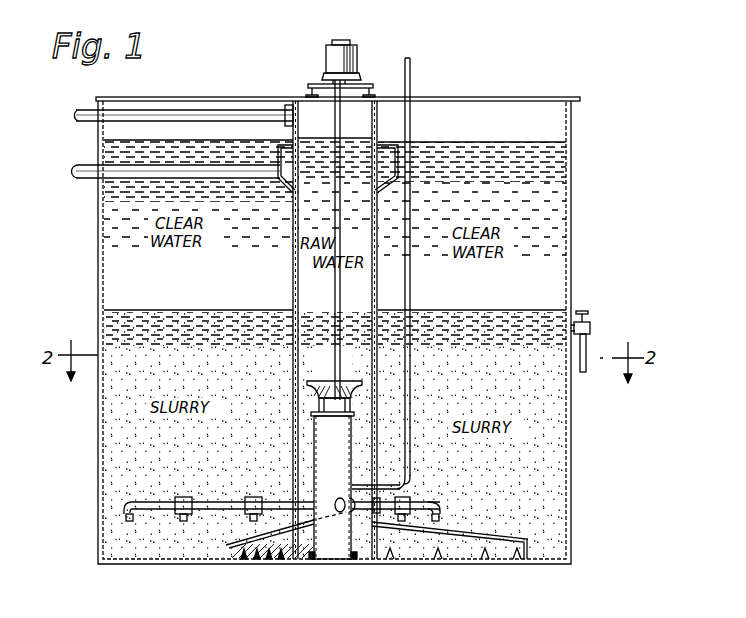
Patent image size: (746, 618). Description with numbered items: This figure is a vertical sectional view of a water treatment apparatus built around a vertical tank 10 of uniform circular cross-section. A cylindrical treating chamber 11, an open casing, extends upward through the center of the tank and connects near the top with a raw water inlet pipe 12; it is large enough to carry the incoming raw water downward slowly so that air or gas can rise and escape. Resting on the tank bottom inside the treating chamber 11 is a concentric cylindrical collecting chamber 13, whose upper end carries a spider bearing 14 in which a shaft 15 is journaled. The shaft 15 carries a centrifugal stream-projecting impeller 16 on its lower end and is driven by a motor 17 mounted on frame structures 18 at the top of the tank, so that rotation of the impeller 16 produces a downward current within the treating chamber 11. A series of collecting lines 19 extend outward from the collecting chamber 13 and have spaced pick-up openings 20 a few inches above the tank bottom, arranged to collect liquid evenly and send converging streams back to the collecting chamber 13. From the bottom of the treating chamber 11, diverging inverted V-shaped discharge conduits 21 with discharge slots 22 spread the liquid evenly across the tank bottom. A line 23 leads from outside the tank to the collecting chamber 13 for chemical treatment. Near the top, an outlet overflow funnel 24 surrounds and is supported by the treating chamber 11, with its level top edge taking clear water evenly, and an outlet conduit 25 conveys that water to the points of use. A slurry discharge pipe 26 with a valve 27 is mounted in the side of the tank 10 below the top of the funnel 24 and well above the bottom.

The vertical tank 10 is at (98, 268).
The treating chamber 11 is at (293, 265).
The raw water inlet pipe 12 is at (184, 110).
The collecting chamber 13 is at (313, 448).
The spider bearing 14 is at (341, 405).
The shaft 15 is at (339, 286).
The centrifugal stream-projecting impeller 16 is at (310, 380).
The motor 17 is at (332, 53).
The frame structures 18 is at (310, 89).
The collecting lines 19 is at (214, 500).
The pick-up openings 20 is at (182, 521).
The inverted V-shaped discharge conduits 21 is at (257, 562).
The discharge slots 22 is at (283, 562).
The line 23 is at (411, 67).
The outlet overflow funnel 24 is at (401, 173).
The outlet conduit 25 is at (88, 163).
The slurry discharge pipe 26 is at (586, 348).
The valve 27 is at (589, 326).